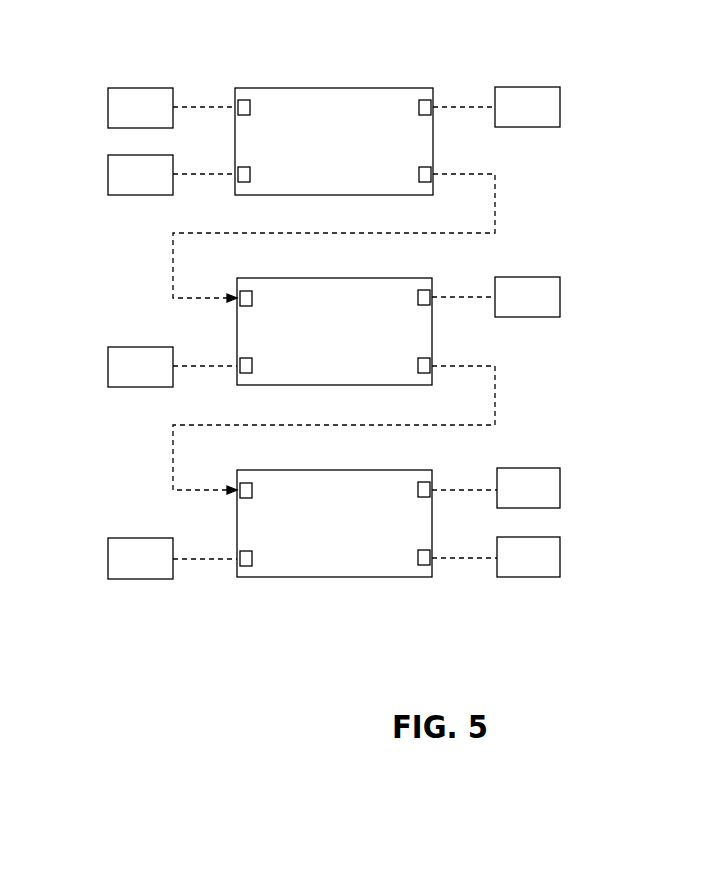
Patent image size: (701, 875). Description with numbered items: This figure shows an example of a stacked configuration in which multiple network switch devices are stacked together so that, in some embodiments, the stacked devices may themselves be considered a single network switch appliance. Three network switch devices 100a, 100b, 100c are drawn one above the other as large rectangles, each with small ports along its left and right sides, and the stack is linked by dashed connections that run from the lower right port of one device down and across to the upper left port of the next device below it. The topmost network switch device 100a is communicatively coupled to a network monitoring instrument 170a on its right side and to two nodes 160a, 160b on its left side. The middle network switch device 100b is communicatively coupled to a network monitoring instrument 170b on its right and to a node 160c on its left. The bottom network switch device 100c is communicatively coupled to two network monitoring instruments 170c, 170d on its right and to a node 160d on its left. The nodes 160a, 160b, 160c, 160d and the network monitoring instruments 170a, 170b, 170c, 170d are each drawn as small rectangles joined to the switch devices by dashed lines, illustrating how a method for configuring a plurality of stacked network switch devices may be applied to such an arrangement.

The network switch device 100a is at (348, 88).
The network switch device 100b is at (330, 278).
The network switch device 100c is at (330, 470).
The node 160a is at (108, 110).
The node 160b is at (108, 175).
The node 160c is at (108, 362).
The node 160d is at (108, 558).
The network monitoring instrument 170a is at (560, 110).
The network monitoring instrument 170b is at (560, 300).
The network monitoring instrument 170c is at (560, 490).
The network monitoring instrument 170d is at (560, 558).